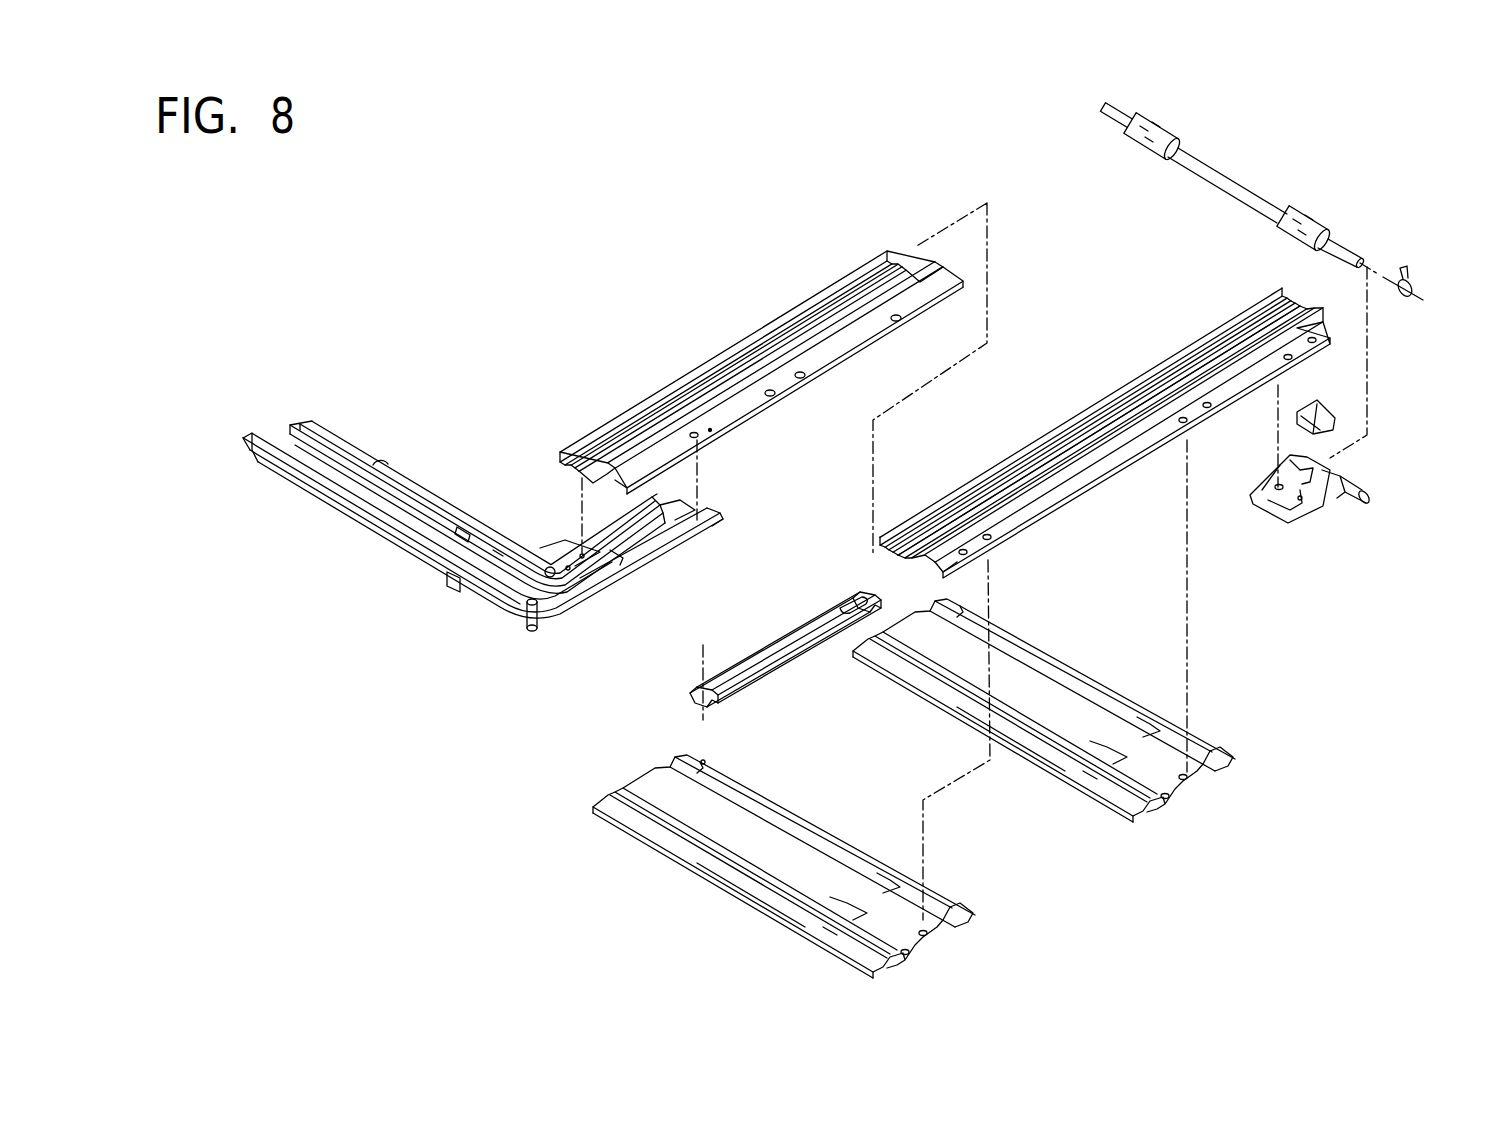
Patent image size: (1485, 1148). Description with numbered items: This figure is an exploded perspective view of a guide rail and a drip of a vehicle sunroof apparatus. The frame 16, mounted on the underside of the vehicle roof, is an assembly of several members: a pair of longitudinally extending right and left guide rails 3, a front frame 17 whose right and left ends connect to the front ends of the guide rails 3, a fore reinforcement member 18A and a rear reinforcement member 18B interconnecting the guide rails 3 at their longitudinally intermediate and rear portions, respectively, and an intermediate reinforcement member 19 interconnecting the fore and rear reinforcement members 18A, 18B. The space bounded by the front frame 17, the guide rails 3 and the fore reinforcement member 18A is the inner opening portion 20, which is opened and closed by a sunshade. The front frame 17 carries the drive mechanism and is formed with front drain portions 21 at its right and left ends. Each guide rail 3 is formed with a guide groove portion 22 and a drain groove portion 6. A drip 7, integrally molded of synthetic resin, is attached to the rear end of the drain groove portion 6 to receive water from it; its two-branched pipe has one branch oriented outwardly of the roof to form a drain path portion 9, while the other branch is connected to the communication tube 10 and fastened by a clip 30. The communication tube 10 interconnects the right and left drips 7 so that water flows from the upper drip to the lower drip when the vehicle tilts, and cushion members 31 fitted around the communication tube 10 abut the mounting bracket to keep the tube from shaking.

The guide rail 3 is at (913, 414).
The drain groove portion 6 is at (1105, 433).
The drip 7 is at (1320, 498).
The drain path portion 9 is at (1358, 500).
The communication tube 10 is at (1219, 186).
The frame 16 is at (568, 368).
The front frame 17 is at (483, 553).
The fore reinforcement member 18A is at (780, 807).
The rear reinforcement member 18B is at (1043, 770).
The intermediate reinforcement member 19 is at (765, 657).
The inner opening portion 20 is at (373, 465).
The front drain portion 21 is at (520, 612).
The guide groove portion 22 is at (993, 472).
The clip 30 is at (1407, 297).
The cushion member 31 is at (1135, 147).